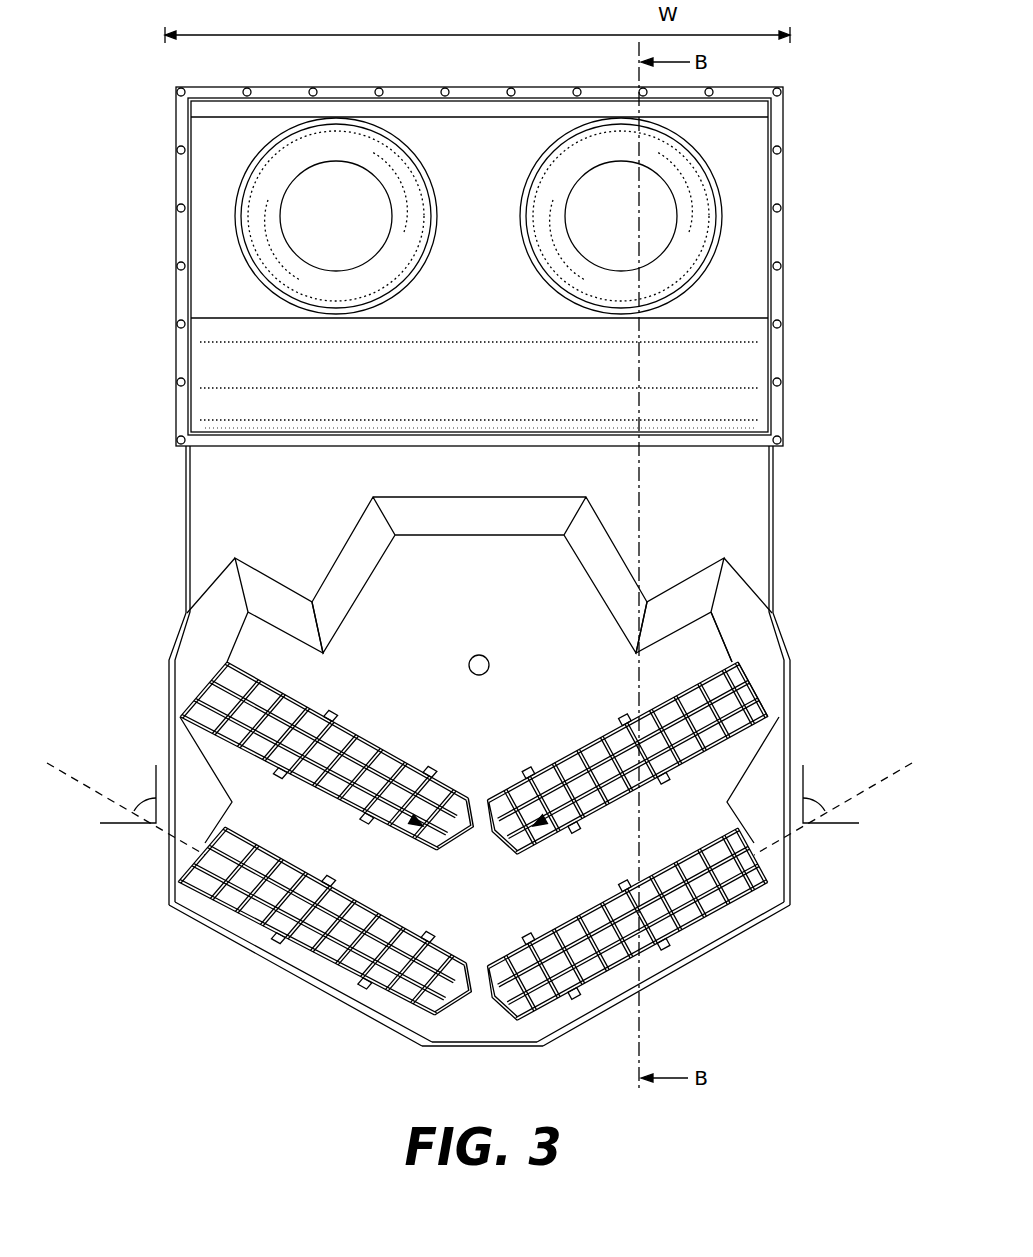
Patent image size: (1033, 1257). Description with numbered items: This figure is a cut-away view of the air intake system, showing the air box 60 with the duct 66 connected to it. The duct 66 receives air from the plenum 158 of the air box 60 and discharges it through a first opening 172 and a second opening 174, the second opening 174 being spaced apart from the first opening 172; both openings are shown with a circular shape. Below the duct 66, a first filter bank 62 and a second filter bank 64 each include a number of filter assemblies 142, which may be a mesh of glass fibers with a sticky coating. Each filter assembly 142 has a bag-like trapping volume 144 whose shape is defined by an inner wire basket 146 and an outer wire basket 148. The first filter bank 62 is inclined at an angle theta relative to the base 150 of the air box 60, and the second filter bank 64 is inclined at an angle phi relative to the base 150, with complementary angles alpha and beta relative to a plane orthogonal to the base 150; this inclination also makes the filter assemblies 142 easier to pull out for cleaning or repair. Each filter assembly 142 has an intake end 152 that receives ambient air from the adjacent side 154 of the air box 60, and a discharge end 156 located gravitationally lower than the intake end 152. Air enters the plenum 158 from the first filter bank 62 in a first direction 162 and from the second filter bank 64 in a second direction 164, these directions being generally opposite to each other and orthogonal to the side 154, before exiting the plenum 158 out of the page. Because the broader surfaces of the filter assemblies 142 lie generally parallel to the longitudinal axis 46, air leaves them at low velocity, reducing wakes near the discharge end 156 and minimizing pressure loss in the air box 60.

The first opening 172 is at (322, 226).
The second opening 174 is at (607, 226).
The air box 60 is at (340, 550).
The duct 66 is at (773, 513).
The side 154 is at (236, 630).
The outer wire basket 148 is at (690, 672).
The inner wire basket 146 is at (735, 670).
The longitudinal axis 46 is at (482, 655).
The trapping volume 144 is at (568, 720).
The filter assembly 142 is at (340, 728).
The first filter bank 62 is at (148, 714).
The second filter bank 64 is at (808, 740).
The first direction 162 is at (390, 813).
The second direction 164 is at (568, 815).
The plenum 158 is at (460, 920).
The intake end 152 is at (782, 847).
The base 150 is at (427, 1050).
The discharge end 156 is at (508, 1046).